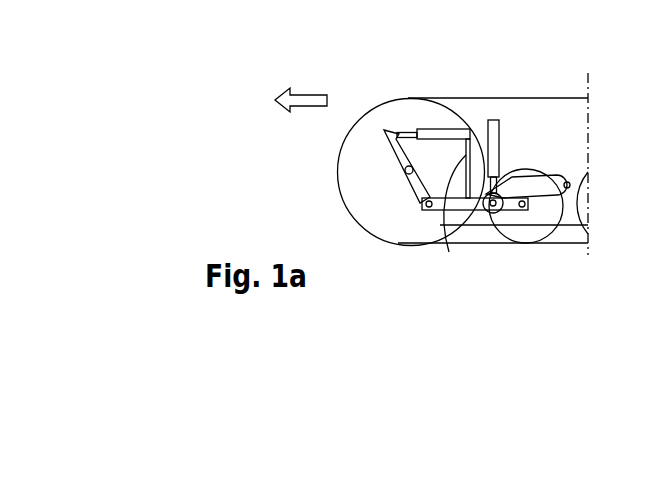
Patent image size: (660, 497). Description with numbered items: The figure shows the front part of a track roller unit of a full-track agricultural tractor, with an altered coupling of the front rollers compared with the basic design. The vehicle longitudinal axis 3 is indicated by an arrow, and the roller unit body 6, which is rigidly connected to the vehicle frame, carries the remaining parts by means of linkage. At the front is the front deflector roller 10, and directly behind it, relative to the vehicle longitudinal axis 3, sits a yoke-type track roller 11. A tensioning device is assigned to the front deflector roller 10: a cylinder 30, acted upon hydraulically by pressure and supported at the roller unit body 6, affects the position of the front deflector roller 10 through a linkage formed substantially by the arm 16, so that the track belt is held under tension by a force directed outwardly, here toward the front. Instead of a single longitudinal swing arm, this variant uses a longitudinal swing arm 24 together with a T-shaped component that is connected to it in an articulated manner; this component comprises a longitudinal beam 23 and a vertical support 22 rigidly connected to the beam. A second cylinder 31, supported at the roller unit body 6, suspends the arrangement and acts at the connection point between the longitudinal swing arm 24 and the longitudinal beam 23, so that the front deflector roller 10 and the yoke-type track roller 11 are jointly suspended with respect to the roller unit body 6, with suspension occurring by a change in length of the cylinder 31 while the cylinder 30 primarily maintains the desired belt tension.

The vehicle longitudinal axis 3 is at (306, 97).
The roller unit body 6 is at (559, 137).
The front deflector roller 10 is at (405, 228).
The yoke-type track roller 11 is at (523, 227).
The arm 16 is at (393, 147).
The vertical support 22 is at (457, 207).
The longitudinal beam 23 is at (459, 198).
The longitudinal swing arm 24 is at (543, 196).
The cylinder 30 is at (443, 133).
The cylinder 31 is at (493, 143).